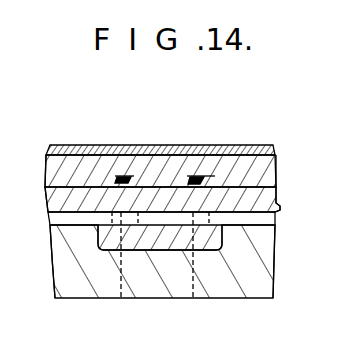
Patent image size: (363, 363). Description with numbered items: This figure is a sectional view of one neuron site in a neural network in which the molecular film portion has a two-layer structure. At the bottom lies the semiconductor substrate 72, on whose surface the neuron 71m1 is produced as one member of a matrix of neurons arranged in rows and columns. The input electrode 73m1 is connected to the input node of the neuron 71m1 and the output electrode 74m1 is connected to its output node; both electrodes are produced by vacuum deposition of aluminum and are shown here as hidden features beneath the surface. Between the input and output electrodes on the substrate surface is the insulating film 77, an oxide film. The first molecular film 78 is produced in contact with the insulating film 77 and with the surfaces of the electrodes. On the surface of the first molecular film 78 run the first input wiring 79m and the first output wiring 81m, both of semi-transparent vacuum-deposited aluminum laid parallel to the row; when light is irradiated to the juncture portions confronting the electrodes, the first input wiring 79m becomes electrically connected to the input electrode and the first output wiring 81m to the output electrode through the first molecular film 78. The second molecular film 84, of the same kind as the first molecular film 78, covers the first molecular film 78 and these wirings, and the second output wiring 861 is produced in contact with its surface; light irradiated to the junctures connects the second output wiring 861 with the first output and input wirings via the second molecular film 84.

The second molecular film 84 is at (94, 160).
The first output wiring 81m is at (133, 176).
The second output wiring 861 is at (236, 145).
The first input wiring 79m is at (276, 167).
The insulating film 77 is at (260, 217).
The first molecular film 78 is at (50, 207).
The neuron 71m1 is at (213, 238).
The semiconductor substrate 72 is at (253, 282).
The output electrode 74m1 is at (119, 299).
The input electrode 73m1 is at (191, 299).